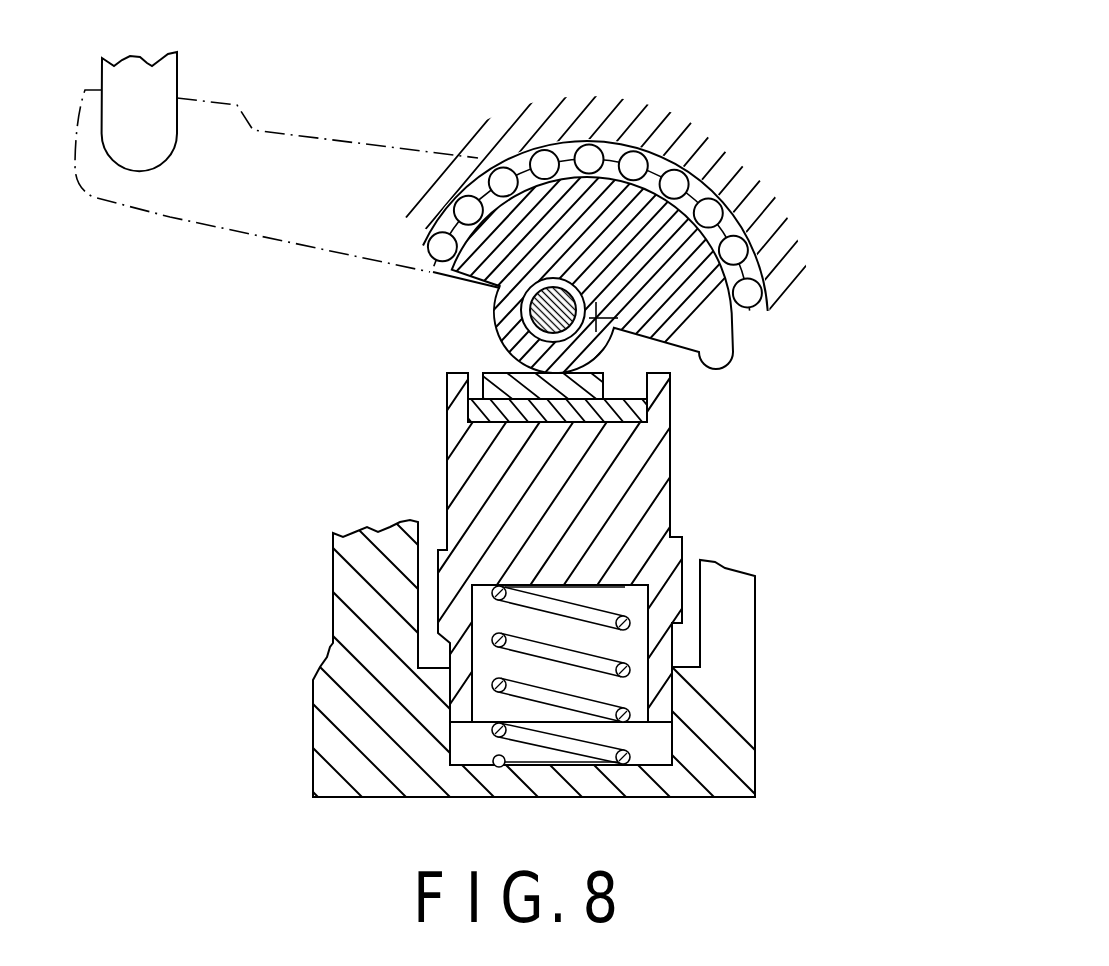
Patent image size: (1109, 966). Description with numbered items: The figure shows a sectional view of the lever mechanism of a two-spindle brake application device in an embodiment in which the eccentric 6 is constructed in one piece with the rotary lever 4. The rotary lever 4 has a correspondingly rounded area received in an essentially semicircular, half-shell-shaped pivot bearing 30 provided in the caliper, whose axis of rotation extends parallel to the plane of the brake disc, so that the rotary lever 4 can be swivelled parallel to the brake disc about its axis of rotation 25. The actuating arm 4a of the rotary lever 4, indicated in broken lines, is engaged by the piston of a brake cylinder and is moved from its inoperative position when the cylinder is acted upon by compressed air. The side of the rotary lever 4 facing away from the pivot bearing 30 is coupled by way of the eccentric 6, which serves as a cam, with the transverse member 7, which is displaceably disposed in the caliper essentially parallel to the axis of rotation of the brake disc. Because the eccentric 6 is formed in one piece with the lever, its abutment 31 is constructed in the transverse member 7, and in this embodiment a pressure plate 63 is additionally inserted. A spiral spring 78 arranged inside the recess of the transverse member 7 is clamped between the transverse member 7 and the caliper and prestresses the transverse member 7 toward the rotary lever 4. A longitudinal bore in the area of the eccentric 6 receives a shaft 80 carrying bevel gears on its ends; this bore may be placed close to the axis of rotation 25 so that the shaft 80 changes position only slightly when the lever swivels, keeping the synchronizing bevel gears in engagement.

The rotary lever 4 is at (723, 330).
The actuating arm 4a is at (340, 153).
The pivot bearing 30 is at (552, 163).
The eccentric 6 is at (499, 336).
The shaft 80 is at (530, 312).
The axis of rotation 25 is at (605, 319).
The transverse member 7 is at (493, 496).
The pressure plate 63 is at (495, 371).
The abutment 31 is at (470, 418).
The spiral spring 78 is at (610, 708).